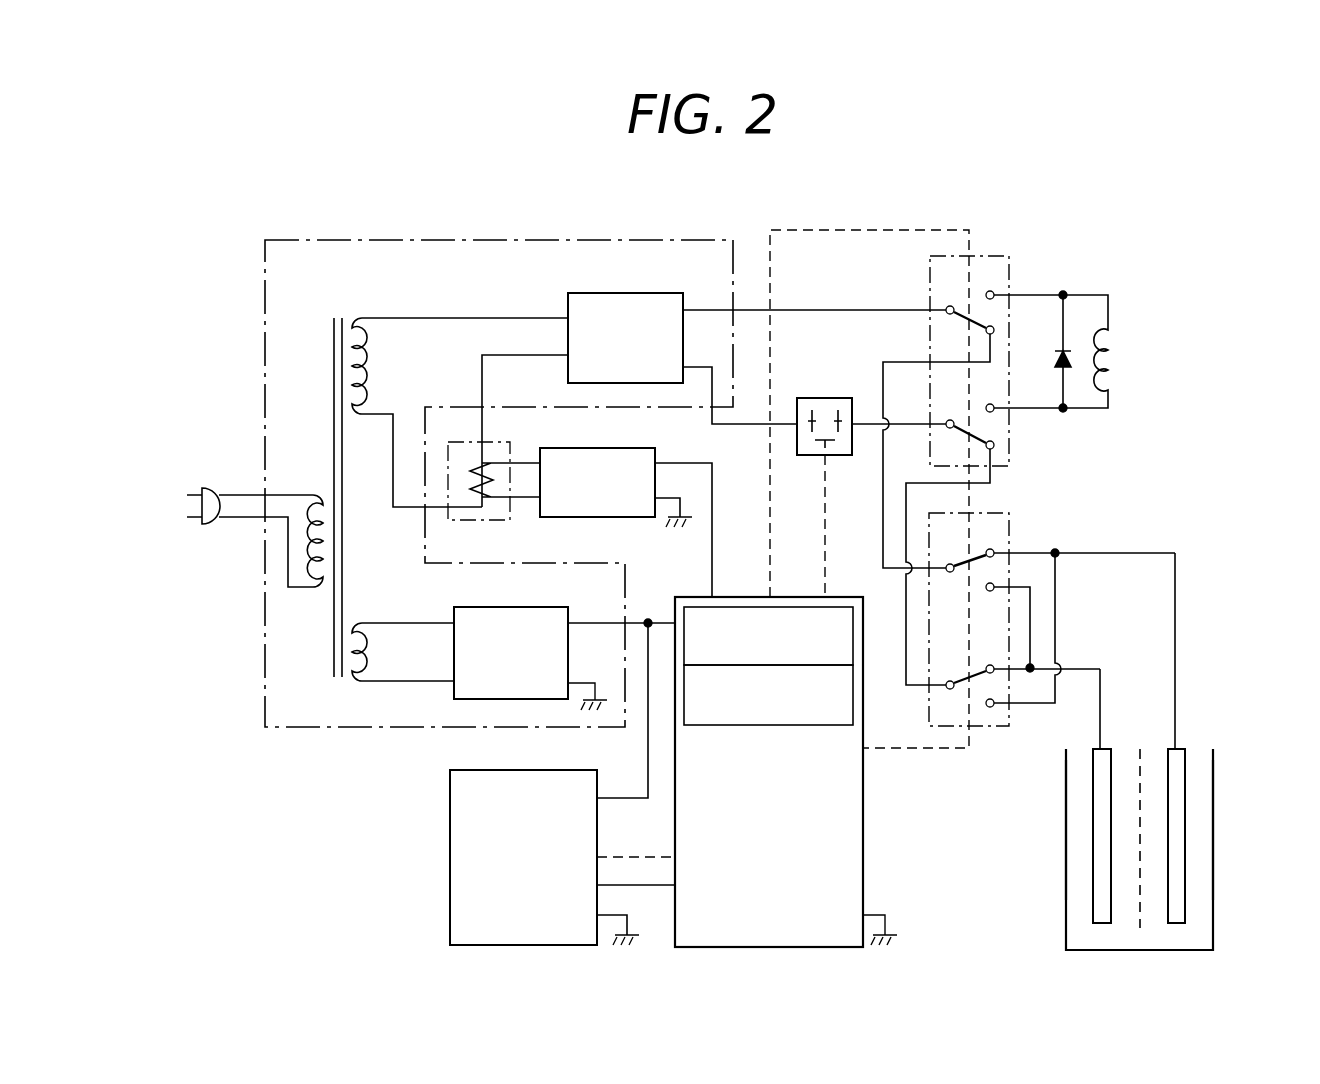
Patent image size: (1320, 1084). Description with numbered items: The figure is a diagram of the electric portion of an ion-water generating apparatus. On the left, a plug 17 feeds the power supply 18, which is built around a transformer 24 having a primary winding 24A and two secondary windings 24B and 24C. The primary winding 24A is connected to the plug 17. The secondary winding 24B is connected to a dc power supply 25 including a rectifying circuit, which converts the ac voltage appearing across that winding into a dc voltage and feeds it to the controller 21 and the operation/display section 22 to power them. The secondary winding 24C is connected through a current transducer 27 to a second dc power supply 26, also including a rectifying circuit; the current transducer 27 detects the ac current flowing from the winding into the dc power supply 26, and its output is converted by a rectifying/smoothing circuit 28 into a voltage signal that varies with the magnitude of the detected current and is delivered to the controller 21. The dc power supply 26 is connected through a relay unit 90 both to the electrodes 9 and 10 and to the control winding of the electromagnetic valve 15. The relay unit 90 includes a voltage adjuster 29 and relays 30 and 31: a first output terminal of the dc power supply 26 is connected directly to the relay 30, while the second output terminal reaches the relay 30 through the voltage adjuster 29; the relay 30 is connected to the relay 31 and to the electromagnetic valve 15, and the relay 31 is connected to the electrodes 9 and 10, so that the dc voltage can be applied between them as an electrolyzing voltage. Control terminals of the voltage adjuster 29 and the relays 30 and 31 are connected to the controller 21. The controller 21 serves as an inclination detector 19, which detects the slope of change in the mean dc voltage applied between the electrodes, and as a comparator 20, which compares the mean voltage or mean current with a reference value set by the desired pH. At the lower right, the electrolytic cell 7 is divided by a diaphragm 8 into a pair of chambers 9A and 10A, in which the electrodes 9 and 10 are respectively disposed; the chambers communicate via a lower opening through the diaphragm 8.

The electrolytic cell 7 is at (1064, 879).
The diaphragm 8 is at (1139, 750).
The electrode 9 is at (1186, 753).
The chamber 9A is at (1197, 783).
The electrode 10 is at (1112, 754).
The chamber 10A is at (1082, 779).
The electromagnetic valve 15 is at (1120, 364).
The plug 17 is at (208, 486).
The power supply 18 is at (322, 240).
The inclination detector 19 is at (854, 631).
The comparator 20 is at (854, 691).
The controller 21 is at (864, 836).
The operation/display section 22 is at (551, 773).
The transformer 24 is at (334, 654).
The primary winding 24A is at (300, 506).
The secondary winding 24B is at (376, 650).
The secondary winding 24C is at (376, 349).
The dc power supply 25 is at (528, 614).
The dc power supply 26 is at (644, 293).
The current transducer 27 is at (510, 458).
The rectifying/smoothing circuit 28 is at (613, 452).
The voltage adjuster 29 is at (814, 400).
The relay 30 is at (1009, 278).
The relay 31 is at (1006, 522).
The relay unit 90 is at (1010, 222).